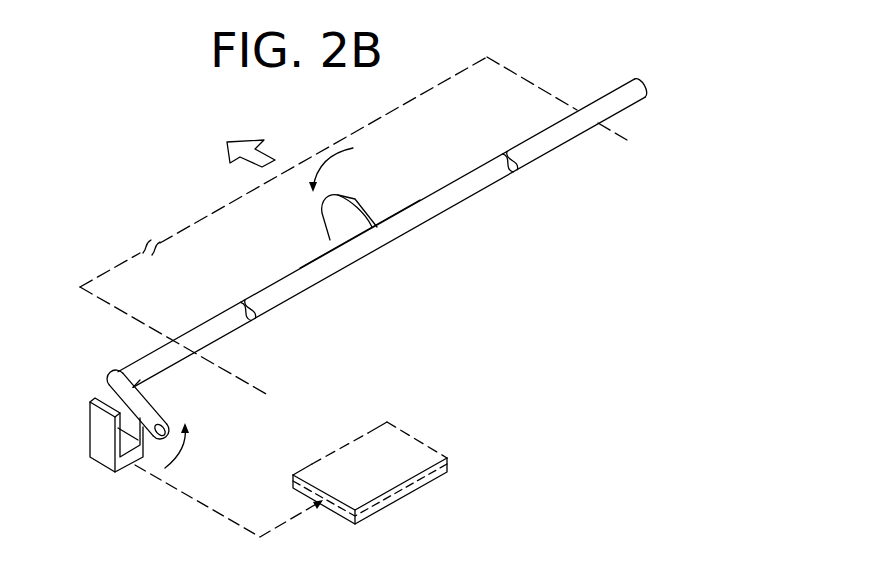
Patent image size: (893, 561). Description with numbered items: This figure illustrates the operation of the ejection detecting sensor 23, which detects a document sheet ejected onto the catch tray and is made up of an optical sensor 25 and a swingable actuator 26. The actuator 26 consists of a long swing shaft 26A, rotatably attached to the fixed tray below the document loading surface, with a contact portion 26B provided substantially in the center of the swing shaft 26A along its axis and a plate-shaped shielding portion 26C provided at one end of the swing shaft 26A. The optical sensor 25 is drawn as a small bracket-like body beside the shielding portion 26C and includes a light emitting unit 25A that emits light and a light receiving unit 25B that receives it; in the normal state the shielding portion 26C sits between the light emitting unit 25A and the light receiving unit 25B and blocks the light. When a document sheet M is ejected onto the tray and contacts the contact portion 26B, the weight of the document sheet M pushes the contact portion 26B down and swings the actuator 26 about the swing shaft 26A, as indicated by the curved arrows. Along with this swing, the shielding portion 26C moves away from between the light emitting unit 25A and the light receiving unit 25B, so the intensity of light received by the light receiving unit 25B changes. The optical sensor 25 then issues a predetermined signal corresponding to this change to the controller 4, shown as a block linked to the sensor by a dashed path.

The ejection detecting sensor 23 is at (224, 245).
The document sheet M is at (527, 78).
The actuator 26 is at (666, 74).
The swing shaft 26A is at (343, 268).
The contact portion 26B is at (357, 208).
The shielding portion 26C is at (157, 410).
The optical sensor 25 is at (80, 464).
The light emitting unit 25A is at (100, 417).
The light receiving unit 25B is at (143, 395).
The controller 4 is at (422, 442).